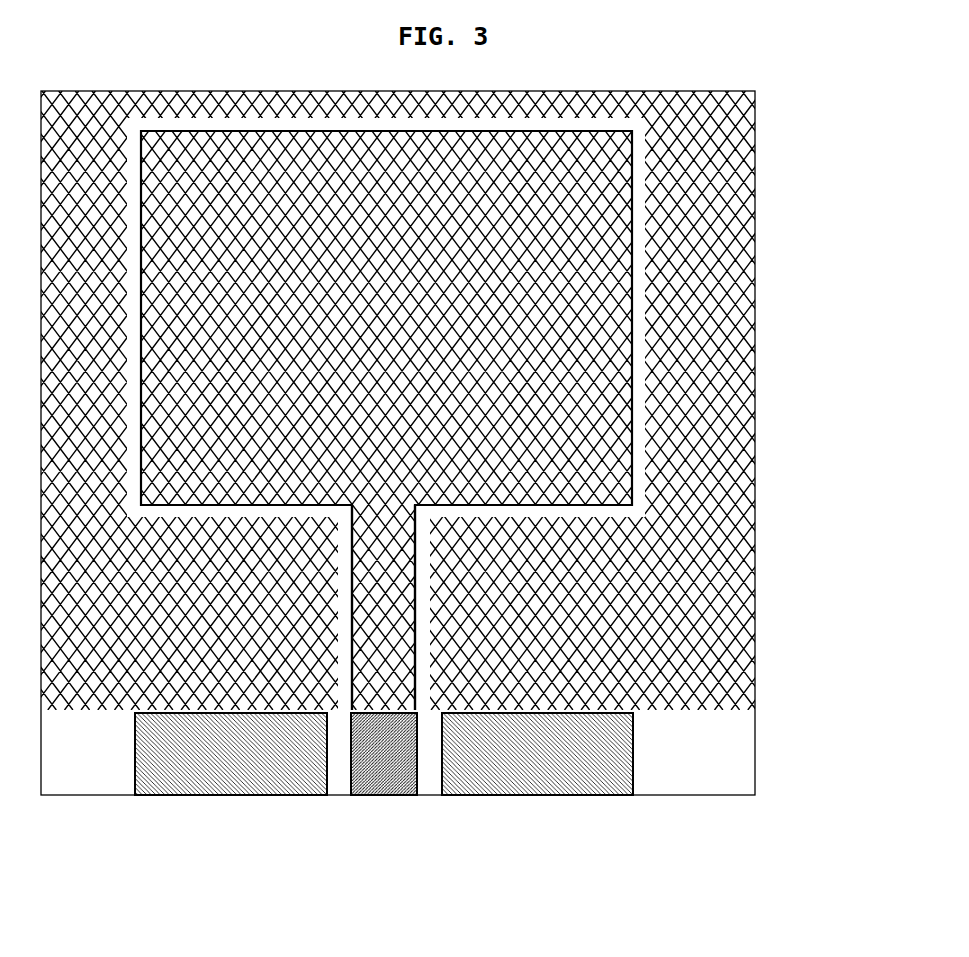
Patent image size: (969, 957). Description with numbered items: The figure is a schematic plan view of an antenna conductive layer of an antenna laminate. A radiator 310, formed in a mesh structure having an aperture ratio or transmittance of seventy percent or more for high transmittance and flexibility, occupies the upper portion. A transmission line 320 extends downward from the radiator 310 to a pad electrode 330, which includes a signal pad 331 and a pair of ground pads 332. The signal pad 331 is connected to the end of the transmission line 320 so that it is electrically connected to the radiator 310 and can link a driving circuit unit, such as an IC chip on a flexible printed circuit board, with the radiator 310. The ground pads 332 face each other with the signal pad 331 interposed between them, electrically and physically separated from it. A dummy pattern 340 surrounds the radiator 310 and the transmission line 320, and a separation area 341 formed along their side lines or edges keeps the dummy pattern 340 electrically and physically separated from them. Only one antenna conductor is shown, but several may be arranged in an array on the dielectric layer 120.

The dielectric layer 120 is at (698, 757).
The radiator 310 is at (595, 246).
The transmission line 320 is at (398, 608).
The pad electrode 330 is at (384, 823).
The signal pad 331 is at (390, 767).
The ground pad 332 is at (313, 768).
The dummy pattern 340 is at (713, 362).
The separation area 341 is at (655, 414).